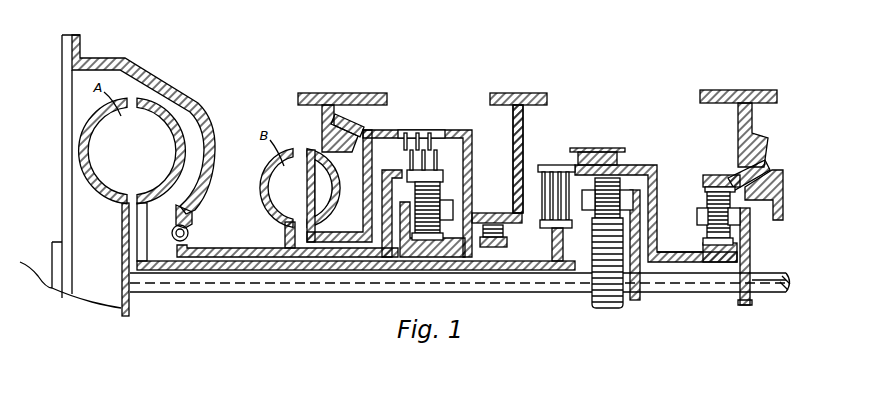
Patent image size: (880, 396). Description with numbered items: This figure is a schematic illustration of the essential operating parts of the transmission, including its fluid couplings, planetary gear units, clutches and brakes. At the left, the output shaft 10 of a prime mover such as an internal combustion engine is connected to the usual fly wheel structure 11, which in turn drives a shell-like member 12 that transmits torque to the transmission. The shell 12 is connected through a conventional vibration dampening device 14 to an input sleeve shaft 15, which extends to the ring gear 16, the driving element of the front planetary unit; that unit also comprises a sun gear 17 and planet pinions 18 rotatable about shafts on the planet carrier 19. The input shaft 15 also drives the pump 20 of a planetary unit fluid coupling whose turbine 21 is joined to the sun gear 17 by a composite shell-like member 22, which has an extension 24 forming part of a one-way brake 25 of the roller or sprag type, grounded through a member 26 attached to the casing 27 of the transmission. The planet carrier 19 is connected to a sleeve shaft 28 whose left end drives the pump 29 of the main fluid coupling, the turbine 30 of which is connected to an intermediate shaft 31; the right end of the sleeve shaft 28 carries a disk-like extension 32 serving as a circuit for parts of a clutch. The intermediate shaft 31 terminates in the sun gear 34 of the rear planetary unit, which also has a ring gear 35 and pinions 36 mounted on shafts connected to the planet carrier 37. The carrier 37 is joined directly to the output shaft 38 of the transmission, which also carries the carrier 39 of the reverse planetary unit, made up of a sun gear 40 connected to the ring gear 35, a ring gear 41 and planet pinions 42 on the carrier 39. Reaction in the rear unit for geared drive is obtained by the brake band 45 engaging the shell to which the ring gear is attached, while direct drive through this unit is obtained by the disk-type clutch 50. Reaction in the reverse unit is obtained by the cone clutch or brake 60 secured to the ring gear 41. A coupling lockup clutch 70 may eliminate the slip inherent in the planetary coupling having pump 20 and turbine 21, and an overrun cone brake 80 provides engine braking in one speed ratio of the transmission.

The output shaft 10 is at (46, 262).
The fly wheel structure 11 is at (62, 200).
The shell-like member 12 is at (172, 90).
The vibration dampening device 14 is at (190, 229).
The input sleeve shaft 15 is at (210, 250).
The ring gear 16 is at (446, 172).
The sun gear 17 is at (444, 258).
The planet pinions 18 is at (442, 197).
The planet carrier 19 is at (390, 232).
The pump 20 is at (262, 197).
The turbine 21 is at (312, 152).
The shell-like member 22 is at (416, 130).
The extension 24 is at (474, 214).
The one-way brake 25 is at (510, 243).
The ground member 26 is at (524, 130).
The casing 27 is at (334, 94).
The sleeve shaft 28 is at (366, 271).
The pump 29 is at (186, 132).
The turbine 30 is at (100, 198).
The intermediate shaft 31 is at (236, 290).
The disk-like extension 32 is at (560, 270).
The sun gear 34 is at (612, 296).
The ring gear 35 is at (640, 168).
The pinions 36 is at (622, 194).
The planet carrier 37 is at (644, 212).
The output shaft 38 is at (736, 284).
The carrier 39 is at (751, 220).
The sun gear 40 is at (716, 263).
The ring gear 41 is at (707, 215).
The planet pinions 42 is at (707, 231).
The brake band 45 is at (608, 150).
The clutch 50 is at (569, 158).
The cone clutch or brake 60 is at (720, 166).
The coupling lockup clutch 70 is at (450, 131).
The overrun cone brake 80 is at (376, 124).